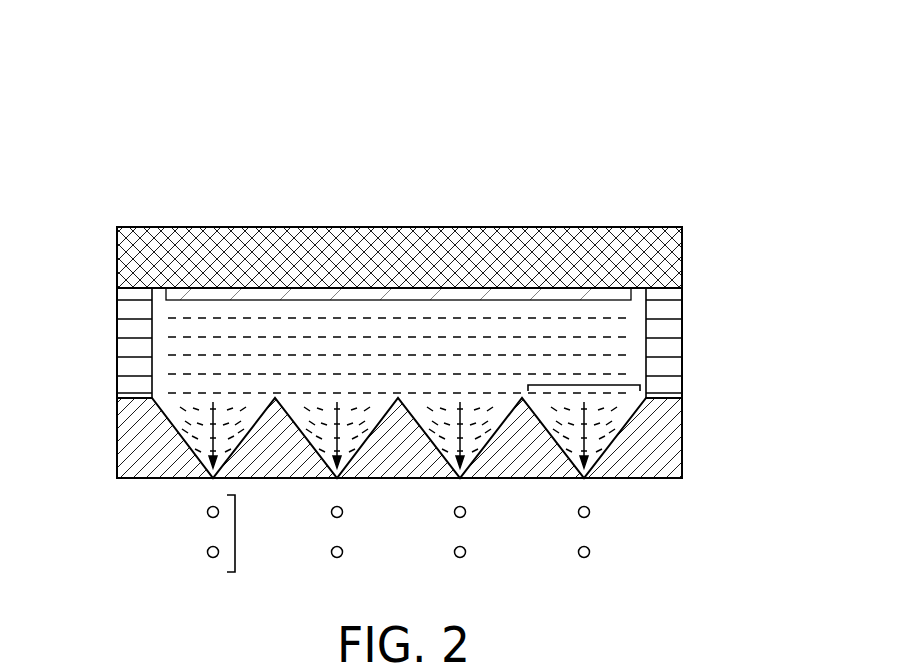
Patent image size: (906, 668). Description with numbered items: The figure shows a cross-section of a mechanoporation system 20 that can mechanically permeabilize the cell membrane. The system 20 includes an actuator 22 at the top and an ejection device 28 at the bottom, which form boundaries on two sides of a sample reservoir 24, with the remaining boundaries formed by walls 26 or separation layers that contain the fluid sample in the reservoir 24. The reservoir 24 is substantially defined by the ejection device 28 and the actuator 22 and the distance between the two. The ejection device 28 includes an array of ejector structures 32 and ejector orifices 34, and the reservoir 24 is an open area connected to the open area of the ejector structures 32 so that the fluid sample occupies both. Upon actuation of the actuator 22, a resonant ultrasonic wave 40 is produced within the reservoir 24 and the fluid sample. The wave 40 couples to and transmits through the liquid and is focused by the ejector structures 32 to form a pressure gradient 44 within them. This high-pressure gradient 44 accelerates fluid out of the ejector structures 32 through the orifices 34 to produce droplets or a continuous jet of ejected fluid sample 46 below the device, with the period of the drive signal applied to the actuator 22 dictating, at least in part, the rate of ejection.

The mechanoporation system 20 is at (98, 96).
The actuator 22 is at (428, 226).
The sample reservoir 24 is at (319, 319).
The resonant ultrasonic wave 40 is at (385, 324).
The walls 26 is at (117, 343).
The ejection device 28 is at (683, 457).
The ejector structures 32 is at (583, 385).
The ejector orifices 34 is at (587, 489).
The pressure gradient 44 is at (192, 434).
The ejected fluid sample 46 is at (239, 530).